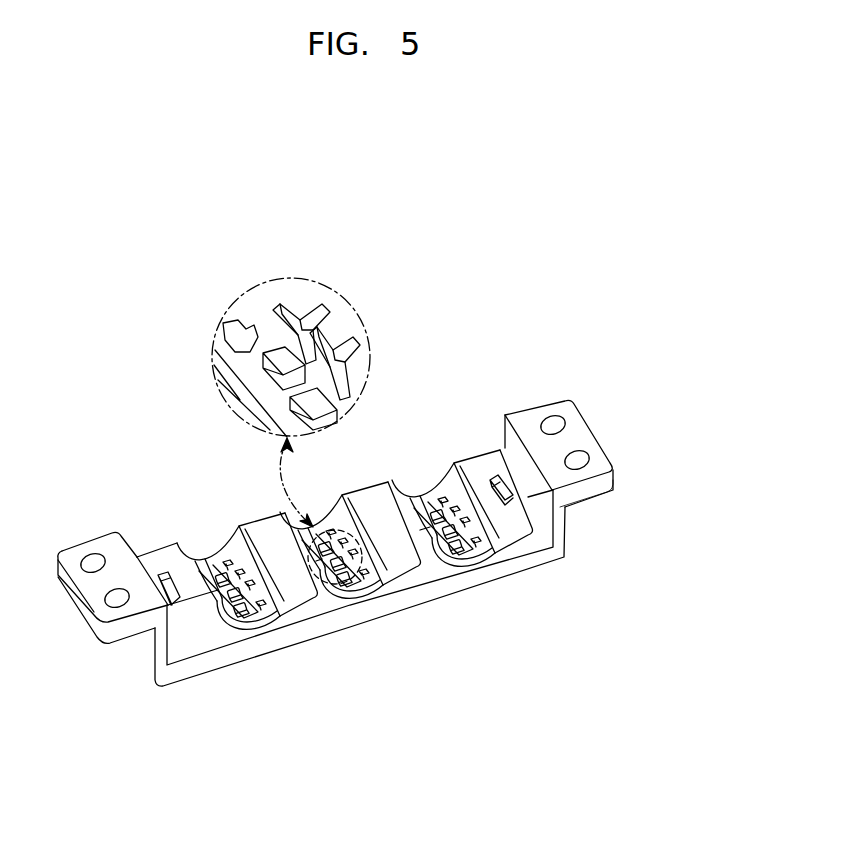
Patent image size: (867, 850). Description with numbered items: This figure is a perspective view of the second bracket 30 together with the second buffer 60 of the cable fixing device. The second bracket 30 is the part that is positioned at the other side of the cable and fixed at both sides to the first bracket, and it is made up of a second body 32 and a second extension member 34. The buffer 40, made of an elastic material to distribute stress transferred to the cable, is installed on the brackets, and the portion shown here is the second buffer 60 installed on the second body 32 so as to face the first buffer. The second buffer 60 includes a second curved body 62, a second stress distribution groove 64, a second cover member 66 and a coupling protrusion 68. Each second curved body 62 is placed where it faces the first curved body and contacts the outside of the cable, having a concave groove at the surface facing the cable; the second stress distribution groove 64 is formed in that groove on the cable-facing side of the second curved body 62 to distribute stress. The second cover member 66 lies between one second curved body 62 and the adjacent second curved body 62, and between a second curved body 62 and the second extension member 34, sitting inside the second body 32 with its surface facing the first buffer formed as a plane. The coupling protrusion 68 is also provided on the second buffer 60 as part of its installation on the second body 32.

The second bracket 30 is at (217, 690).
The second body 32 is at (357, 617).
The second extension member 34 is at (605, 482).
The buffer 40 is at (152, 525).
The second buffer 60 is at (231, 526).
The second curved body 62 is at (252, 315).
The second stress distribution groove 64 is at (431, 494).
The second cover member 66 is at (373, 500).
The coupling protrusion 68 is at (500, 475).